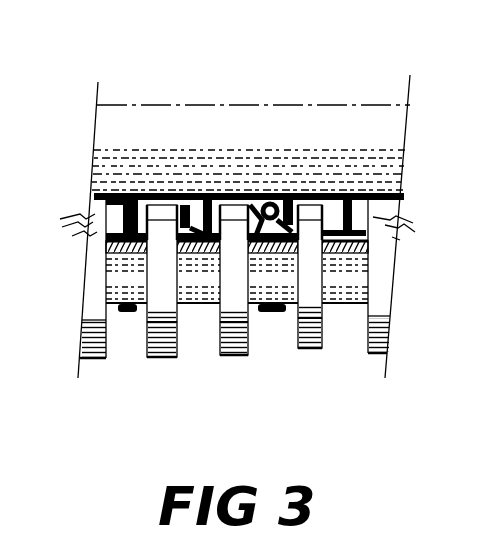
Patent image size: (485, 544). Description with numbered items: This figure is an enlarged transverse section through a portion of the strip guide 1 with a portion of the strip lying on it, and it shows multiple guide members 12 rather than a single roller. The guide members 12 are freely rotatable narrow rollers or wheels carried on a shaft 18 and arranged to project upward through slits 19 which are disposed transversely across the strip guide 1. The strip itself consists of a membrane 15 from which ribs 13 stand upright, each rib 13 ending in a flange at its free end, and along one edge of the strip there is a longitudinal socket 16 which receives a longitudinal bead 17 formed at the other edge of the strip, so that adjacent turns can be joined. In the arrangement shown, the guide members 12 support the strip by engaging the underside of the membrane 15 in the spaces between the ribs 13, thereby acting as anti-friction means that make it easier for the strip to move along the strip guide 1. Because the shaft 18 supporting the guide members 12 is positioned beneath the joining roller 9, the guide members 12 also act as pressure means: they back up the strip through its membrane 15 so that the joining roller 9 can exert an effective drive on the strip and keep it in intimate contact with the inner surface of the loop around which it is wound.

The strip guide 1 is at (370, 240).
The joining roller 9 is at (316, 135).
The guide members 12 is at (233, 290).
The ribs 13 is at (122, 217).
The membrane 15 is at (222, 208).
The longitudinal socket 16 is at (272, 255).
The longitudinal bead 17 is at (270, 204).
The shafts 18 is at (345, 275).
The slits 19 is at (128, 313).